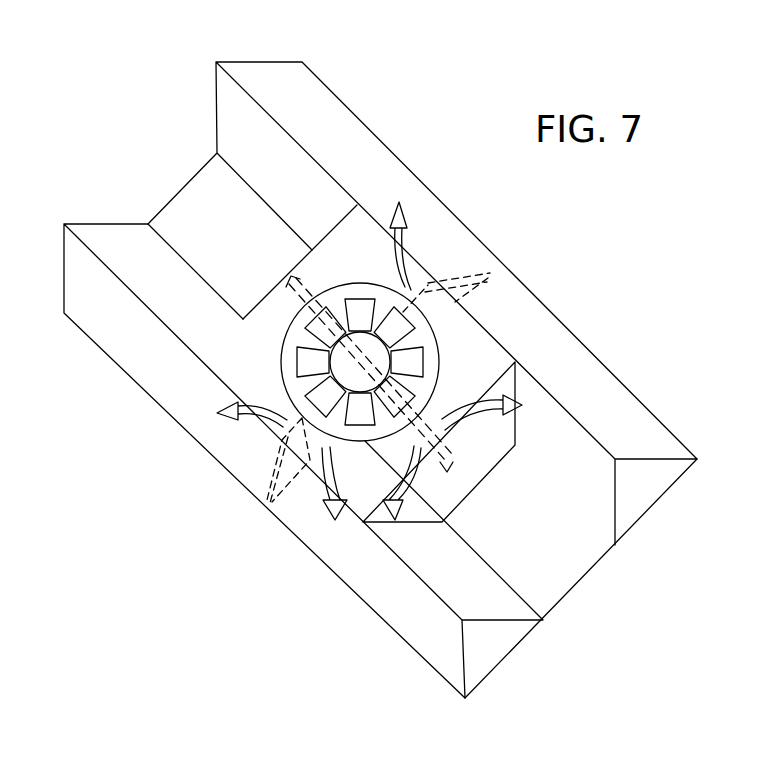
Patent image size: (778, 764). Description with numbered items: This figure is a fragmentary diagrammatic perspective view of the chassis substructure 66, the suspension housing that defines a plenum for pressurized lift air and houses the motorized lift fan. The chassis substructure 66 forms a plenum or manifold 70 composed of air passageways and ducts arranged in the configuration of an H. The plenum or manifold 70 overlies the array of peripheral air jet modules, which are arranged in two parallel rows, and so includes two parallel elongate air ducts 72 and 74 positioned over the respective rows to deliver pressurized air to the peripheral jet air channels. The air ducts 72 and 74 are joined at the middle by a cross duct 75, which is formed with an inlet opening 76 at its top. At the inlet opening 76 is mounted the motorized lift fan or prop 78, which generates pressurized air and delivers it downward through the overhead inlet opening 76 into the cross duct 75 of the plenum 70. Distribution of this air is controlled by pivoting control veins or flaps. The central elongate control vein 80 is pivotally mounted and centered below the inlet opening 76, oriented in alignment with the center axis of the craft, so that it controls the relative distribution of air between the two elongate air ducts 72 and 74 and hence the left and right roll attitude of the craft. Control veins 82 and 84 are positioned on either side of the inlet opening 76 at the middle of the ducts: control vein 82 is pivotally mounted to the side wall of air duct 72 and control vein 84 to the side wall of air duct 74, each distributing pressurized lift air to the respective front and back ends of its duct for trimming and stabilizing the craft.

The chassis substructure 66 is at (340, 683).
The plenum or manifold 70 is at (605, 565).
The elongate air duct 72 is at (88, 224).
The elongate air duct 74 is at (242, 62).
The cross duct 75 is at (312, 250).
The inlet opening 76 is at (283, 336).
The motorized lift fan or prop 78 is at (355, 299).
The central elongate control vein 80 is at (287, 286).
The control vein 82 is at (266, 482).
The control vein 84 is at (487, 274).